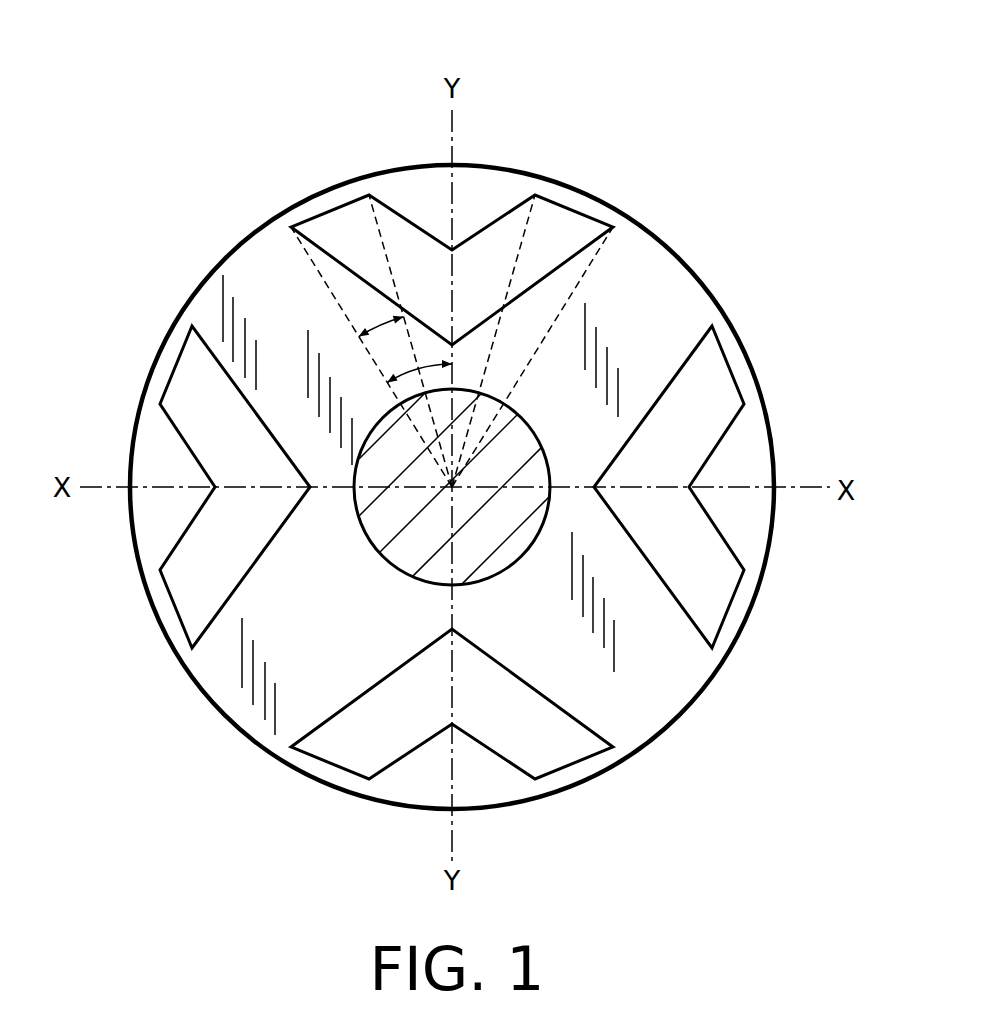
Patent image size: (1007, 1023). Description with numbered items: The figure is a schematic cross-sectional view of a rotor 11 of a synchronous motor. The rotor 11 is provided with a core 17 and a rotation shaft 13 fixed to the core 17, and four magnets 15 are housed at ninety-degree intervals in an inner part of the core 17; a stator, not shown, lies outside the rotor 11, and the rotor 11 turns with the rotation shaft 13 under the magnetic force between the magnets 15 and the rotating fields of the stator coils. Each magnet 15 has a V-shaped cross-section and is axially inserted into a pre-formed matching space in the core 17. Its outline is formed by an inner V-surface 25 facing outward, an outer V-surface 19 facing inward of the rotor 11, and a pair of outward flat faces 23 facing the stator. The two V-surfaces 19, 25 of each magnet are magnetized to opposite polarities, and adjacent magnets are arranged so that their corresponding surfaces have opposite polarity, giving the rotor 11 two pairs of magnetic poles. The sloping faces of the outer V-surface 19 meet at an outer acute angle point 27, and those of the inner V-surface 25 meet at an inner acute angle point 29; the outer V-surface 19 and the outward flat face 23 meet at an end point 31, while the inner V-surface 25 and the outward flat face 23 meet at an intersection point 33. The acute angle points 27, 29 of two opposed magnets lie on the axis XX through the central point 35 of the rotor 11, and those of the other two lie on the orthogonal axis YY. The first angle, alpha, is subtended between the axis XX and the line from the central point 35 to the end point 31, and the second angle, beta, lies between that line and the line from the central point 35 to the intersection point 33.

The rotor 11 is at (712, 115).
The rotation shaft 13 is at (493, 560).
The magnet 15 is at (563, 227).
The core 17 is at (650, 270).
The outer V-surface 19 is at (677, 367).
The outward flat face 23 is at (733, 367).
The inner V-surface 25 is at (723, 443).
The outer acute angle point 27 is at (465, 336).
The inner acute angle point 29 is at (693, 490).
The end point 31 is at (289, 226).
The intersection point 33 is at (370, 195).
The central point 35 is at (375, 548).